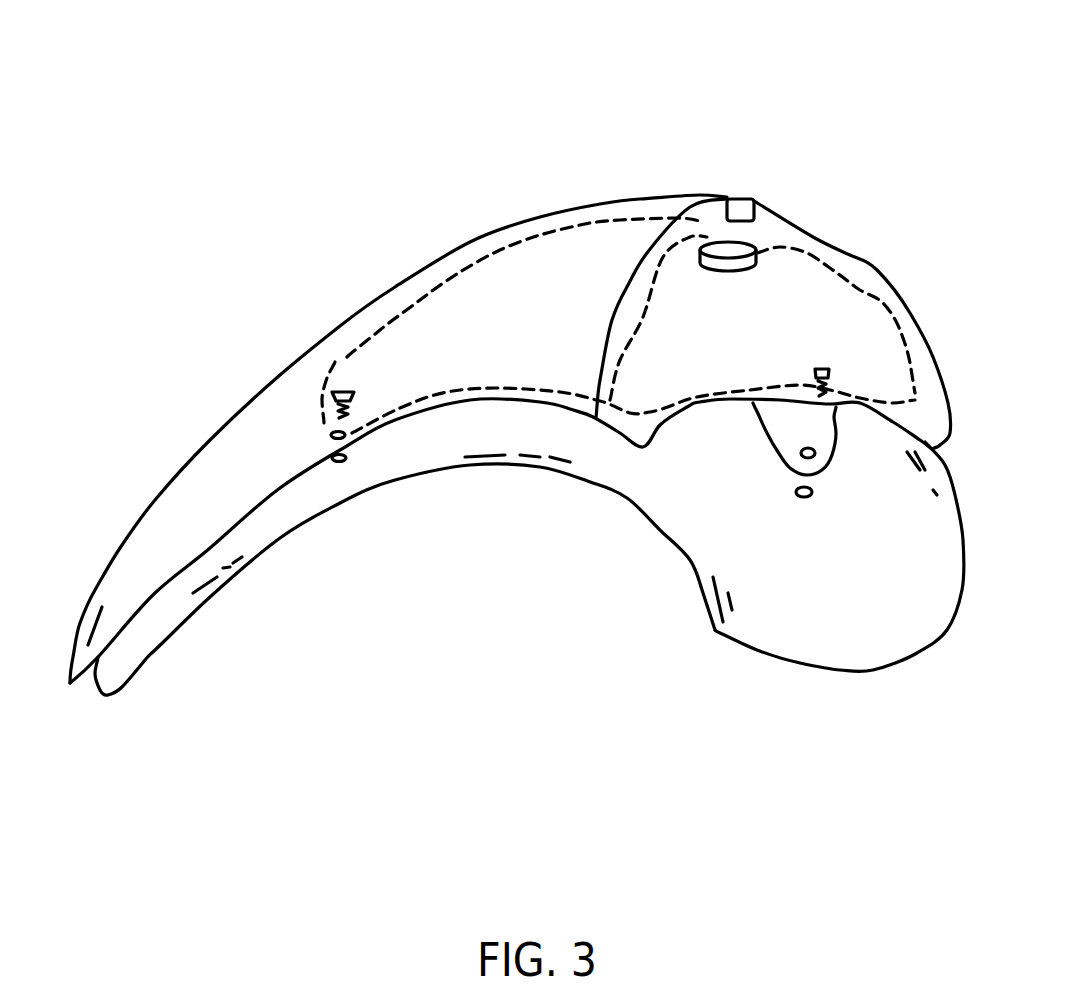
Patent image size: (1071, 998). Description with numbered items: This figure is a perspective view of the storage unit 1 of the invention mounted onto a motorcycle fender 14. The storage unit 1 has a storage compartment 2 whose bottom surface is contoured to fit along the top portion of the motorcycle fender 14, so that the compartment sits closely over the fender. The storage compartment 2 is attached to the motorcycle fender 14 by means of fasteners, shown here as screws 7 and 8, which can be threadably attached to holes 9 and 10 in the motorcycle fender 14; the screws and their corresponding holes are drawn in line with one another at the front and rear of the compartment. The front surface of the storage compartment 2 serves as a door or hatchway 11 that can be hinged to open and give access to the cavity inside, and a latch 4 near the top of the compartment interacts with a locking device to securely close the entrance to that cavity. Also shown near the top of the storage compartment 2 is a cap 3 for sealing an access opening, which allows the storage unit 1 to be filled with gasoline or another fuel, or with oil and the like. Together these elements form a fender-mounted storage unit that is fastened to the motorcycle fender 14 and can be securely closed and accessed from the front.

The storage unit 1 is at (131, 567).
The storage compartment 2 is at (445, 338).
The cap 3 is at (771, 250).
The latch 4 is at (737, 213).
The screw 7 is at (823, 368).
The screw 8 is at (343, 392).
The hole 9 is at (339, 462).
The hole 10 is at (812, 497).
The door or hatchway 11 is at (785, 437).
The motorcycle fender 14 is at (165, 608).